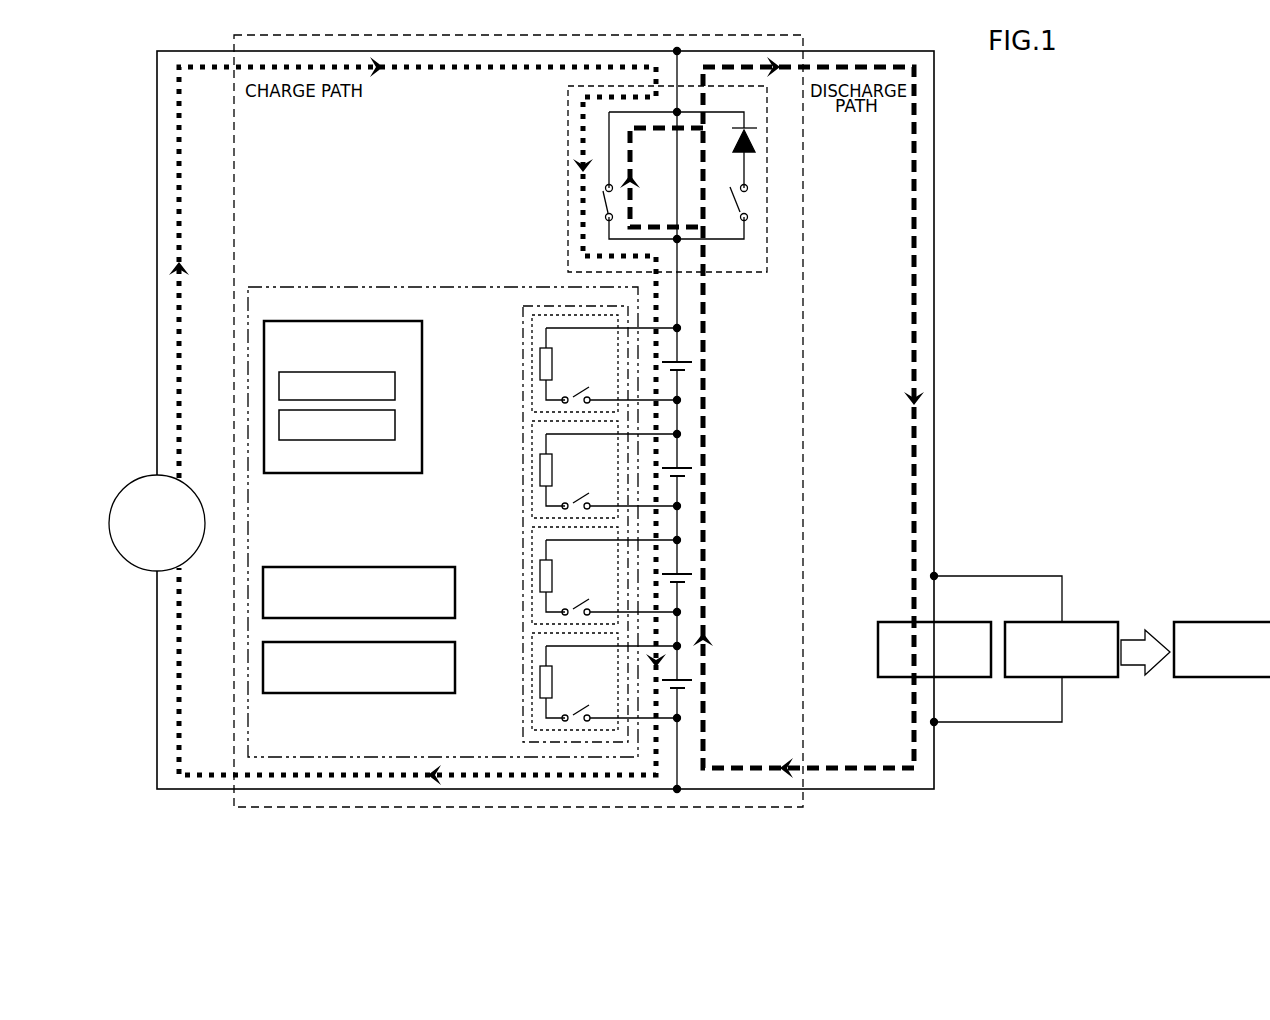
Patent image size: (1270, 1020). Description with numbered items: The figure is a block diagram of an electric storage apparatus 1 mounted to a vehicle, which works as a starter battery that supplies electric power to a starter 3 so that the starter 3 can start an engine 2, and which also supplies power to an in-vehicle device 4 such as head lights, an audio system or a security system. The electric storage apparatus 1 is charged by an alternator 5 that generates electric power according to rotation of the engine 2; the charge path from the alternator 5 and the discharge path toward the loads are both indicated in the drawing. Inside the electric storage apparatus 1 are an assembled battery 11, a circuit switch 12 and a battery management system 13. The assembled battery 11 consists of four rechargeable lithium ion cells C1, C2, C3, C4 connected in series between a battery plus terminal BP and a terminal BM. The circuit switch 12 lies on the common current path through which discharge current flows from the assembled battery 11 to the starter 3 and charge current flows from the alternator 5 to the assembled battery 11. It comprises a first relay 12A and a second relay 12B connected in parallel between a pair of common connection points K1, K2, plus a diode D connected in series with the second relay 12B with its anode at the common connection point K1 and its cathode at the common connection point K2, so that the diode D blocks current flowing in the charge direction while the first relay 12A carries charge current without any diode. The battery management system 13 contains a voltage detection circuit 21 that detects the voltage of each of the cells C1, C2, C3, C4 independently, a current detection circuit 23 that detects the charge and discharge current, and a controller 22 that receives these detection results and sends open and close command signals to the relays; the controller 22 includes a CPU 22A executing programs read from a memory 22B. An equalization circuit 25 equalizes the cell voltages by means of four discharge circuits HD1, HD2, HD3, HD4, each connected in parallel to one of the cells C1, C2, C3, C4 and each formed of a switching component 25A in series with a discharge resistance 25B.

The electric storage apparatus 1 is at (247, 34).
The engine 2 is at (1227, 622).
The starter 3 is at (1096, 622).
The in-vehicle device 4 is at (952, 622).
The alternator 5 is at (134, 474).
The assembled battery 11 is at (733, 503).
The circuit switch 12 is at (678, 187).
The first relay 12A is at (604, 198).
The second relay 12B is at (742, 200).
The battery management system 13 is at (298, 287).
The voltage detection circuit 21 is at (305, 567).
The controller 22 is at (343, 381).
The CPU 22A is at (343, 372).
The memory 22B is at (326, 440).
The current detection circuit 23 is at (305, 693).
The equalization circuit 25 is at (523, 310).
The switching component 25A is at (584, 536).
The discharge resistance 25B is at (540, 362).
The battery plus terminal BP is at (677, 50).
The negative battery terminal BM is at (677, 789).
The common connection point K1 is at (677, 239).
The common connection point K2 is at (677, 112).
The diode D is at (757, 142).
The cell C1 is at (682, 362).
The cell C2 is at (682, 467).
The cell C3 is at (682, 573).
The cell C4 is at (707, 673).
The discharge circuit HD1 is at (532, 387).
The discharge circuit HD2 is at (532, 493).
The discharge circuit HD3 is at (532, 599).
The discharge circuit HD4 is at (532, 705).